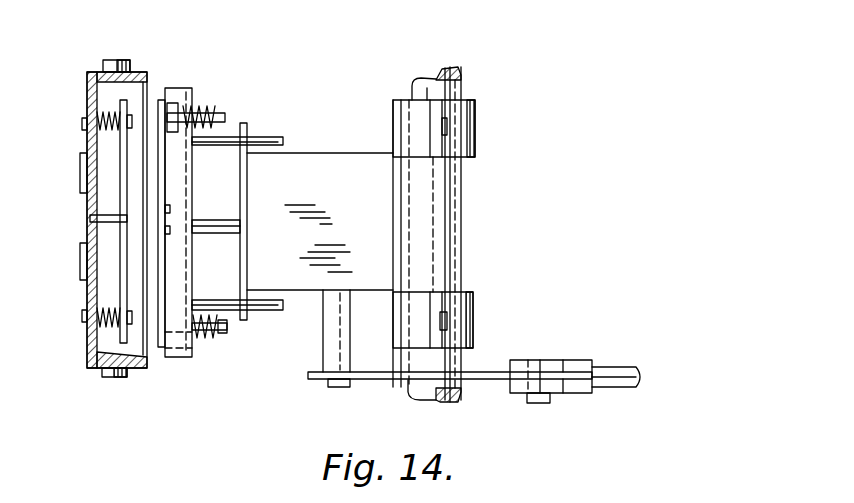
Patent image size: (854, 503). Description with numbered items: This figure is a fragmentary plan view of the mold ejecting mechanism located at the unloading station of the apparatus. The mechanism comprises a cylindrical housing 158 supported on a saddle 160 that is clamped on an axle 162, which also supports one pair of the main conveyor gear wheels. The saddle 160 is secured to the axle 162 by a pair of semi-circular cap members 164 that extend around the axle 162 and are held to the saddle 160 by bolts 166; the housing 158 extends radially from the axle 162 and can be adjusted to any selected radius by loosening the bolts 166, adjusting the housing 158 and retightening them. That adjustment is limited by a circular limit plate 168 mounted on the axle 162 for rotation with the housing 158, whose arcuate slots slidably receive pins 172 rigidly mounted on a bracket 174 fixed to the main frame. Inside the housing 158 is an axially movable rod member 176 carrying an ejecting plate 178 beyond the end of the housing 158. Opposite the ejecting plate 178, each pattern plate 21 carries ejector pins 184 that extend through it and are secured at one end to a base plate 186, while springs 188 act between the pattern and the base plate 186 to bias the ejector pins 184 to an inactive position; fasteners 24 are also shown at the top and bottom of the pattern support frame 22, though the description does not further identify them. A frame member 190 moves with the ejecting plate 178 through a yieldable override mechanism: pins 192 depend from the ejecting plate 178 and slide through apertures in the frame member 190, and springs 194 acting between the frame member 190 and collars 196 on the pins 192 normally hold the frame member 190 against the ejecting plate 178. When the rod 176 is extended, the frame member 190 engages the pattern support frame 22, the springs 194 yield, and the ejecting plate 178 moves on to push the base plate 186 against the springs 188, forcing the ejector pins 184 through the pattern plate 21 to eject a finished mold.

The pattern plate 21 is at (80, 163).
The pattern support frame 22 is at (98, 72).
The bolt 24 is at (115, 60).
The cylindrical housing 158 is at (338, 158).
The saddle 160 is at (394, 110).
The axle 162 is at (443, 178).
The semi-circular cap members 164 is at (470, 112).
The bolts 166 is at (448, 122).
The circular limit plate 168 is at (376, 380).
The pins 172 is at (537, 403).
The bracket 174 is at (582, 363).
The rod member 176 is at (213, 218).
The ejecting plate 178 is at (160, 132).
The ejector pins 184 is at (83, 127).
The base plate 186 is at (125, 100).
The springs 188 is at (105, 118).
The frame member 190 is at (183, 356).
The pins 192 is at (178, 113).
The springs 194 is at (197, 110).
The collars 196 is at (223, 107).